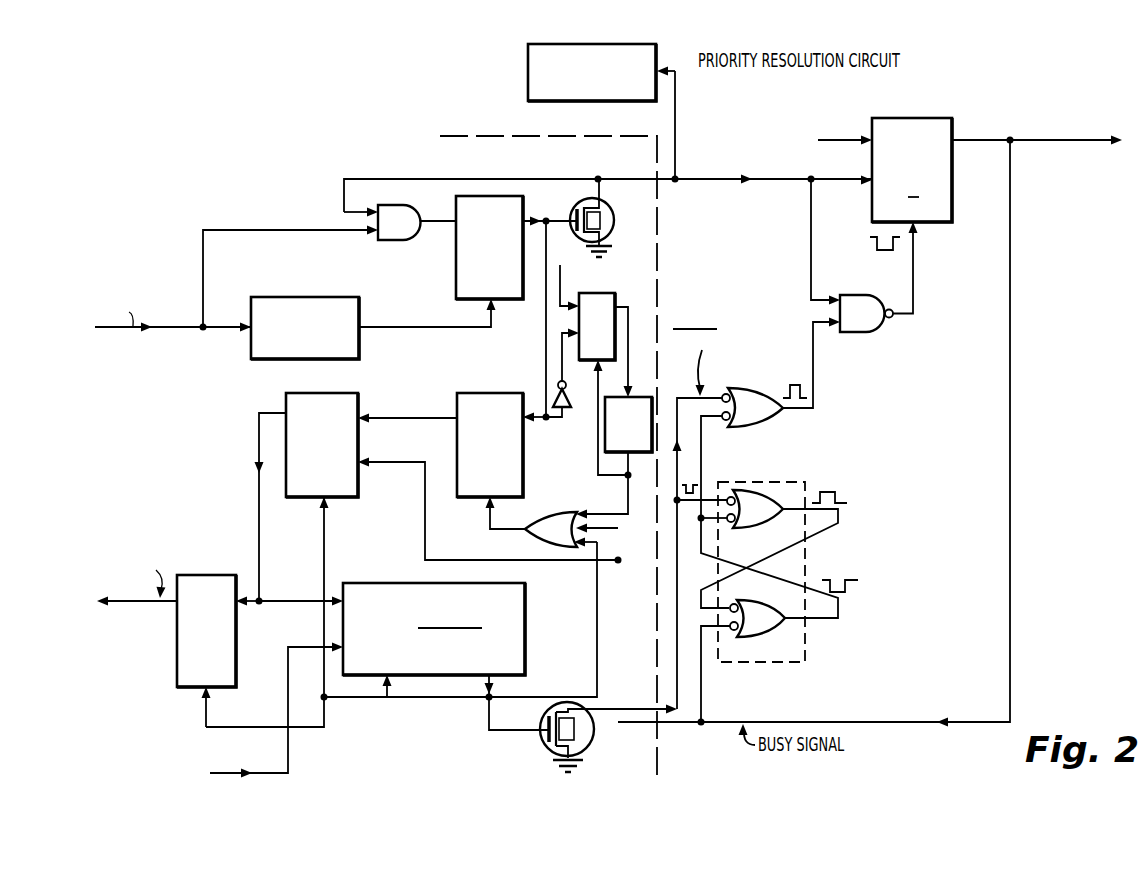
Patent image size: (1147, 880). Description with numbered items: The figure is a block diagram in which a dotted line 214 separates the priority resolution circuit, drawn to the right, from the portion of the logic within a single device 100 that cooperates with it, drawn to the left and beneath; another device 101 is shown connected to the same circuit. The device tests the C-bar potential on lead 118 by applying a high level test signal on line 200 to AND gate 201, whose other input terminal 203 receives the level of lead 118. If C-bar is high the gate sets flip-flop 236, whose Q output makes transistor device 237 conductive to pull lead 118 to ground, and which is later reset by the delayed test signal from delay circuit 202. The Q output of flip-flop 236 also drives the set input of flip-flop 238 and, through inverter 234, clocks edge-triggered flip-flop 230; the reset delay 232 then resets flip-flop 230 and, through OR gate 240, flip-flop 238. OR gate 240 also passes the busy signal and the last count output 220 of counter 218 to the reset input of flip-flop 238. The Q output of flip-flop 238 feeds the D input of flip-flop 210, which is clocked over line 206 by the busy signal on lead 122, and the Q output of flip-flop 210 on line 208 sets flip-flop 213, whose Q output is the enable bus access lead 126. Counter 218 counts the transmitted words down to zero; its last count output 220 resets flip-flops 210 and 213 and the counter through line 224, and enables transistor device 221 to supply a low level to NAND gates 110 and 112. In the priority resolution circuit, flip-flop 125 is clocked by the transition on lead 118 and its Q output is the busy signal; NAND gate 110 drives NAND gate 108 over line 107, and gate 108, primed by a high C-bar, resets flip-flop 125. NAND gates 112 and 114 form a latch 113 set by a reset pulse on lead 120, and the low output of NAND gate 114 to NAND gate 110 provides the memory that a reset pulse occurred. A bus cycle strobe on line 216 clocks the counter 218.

The device 100 is at (228, 160).
The device 101 is at (585, 111).
The output line of gate 110 to NAND gate 108 107 is at (819, 363).
The NAND gate 108 is at (864, 255).
The NAND gate 110 is at (754, 392).
The NAND gate 112 is at (762, 549).
The latch 113 is at (767, 571).
The NAND gate 114 is at (778, 571).
The lead 118 is at (608, 178).
The lead 120 is at (691, 518).
The busy signal lead 122 is at (836, 433).
The flip-flop 125 is at (959, 168).
The enable bus access lead 126 is at (137, 580).
The line 200 is at (235, 298).
The AND gate 201 is at (417, 239).
The delay circuit 202 is at (373, 314).
The input terminal 203 is at (337, 209).
The clock line to flip-flop 210 206 is at (490, 511).
The output line of flip-flop 210 208 is at (250, 507).
The flip-flop 210 is at (330, 430).
The flip-flop 213 is at (260, 635).
The dotted line 214 is at (537, 443).
The bus cycle strobe line 216 is at (205, 714).
The counter 218 is at (453, 629).
The last count output 220 is at (498, 707).
The transistor device 221 is at (608, 737).
The counter reset line 224 is at (401, 615).
The flip-flop 230 is at (597, 320).
The reset delay 232 is at (605, 439).
The inverter 234 is at (571, 329).
The flip-flop 236 is at (498, 250).
The transistor device 237 is at (610, 218).
The flip-flop 238 is at (452, 430).
The OR gate 240 is at (552, 513).